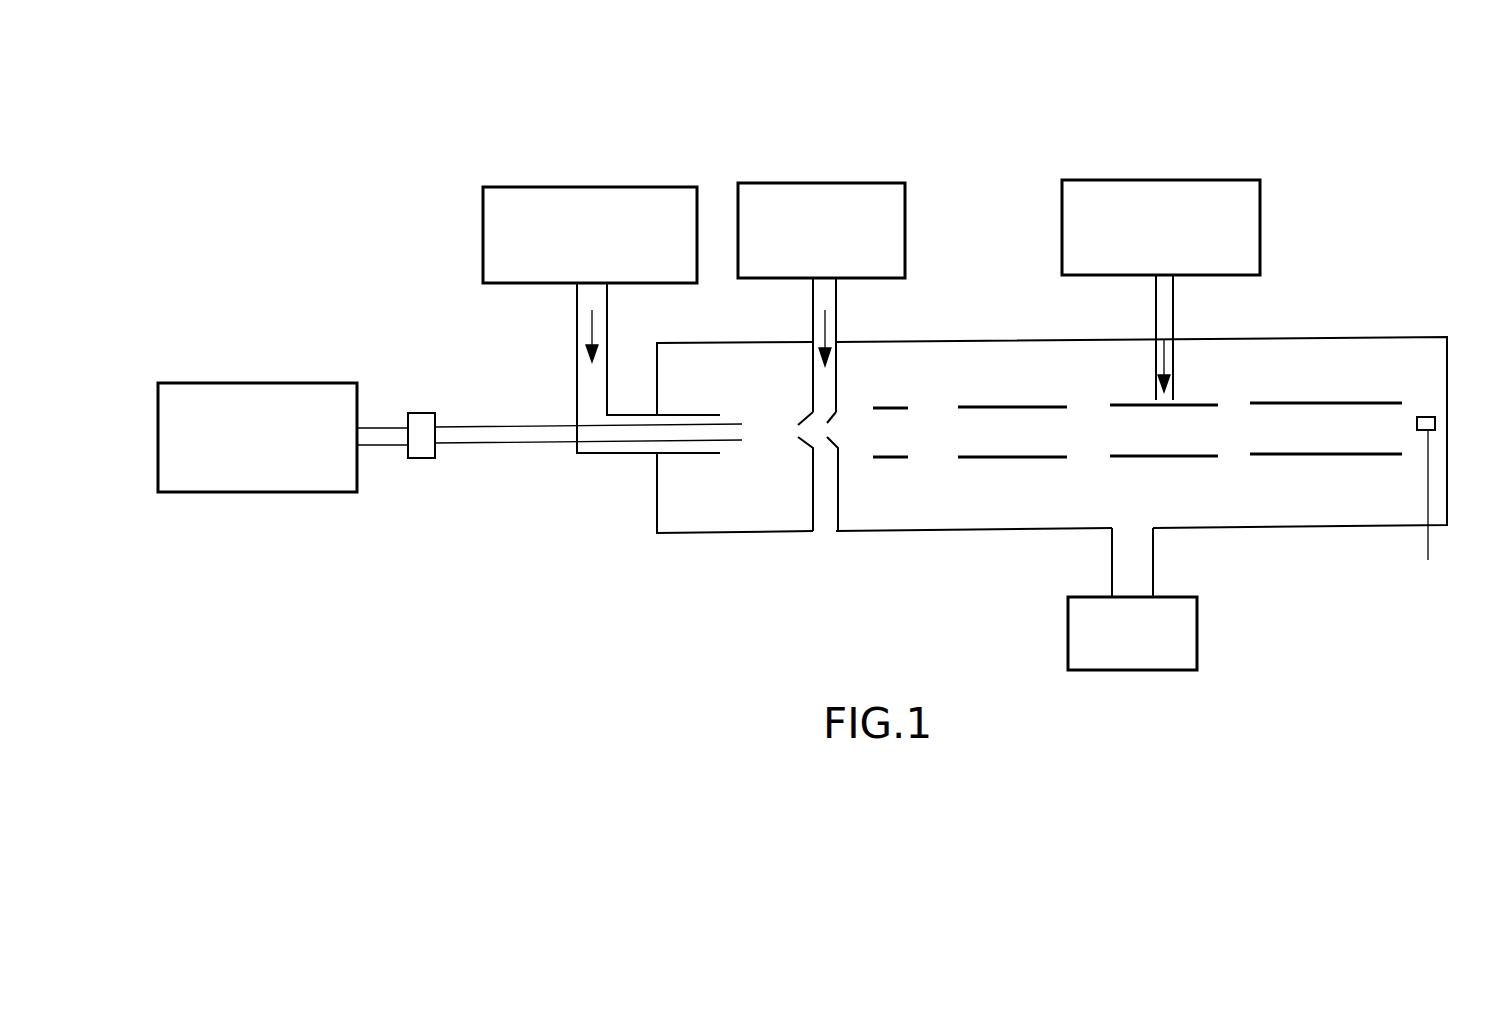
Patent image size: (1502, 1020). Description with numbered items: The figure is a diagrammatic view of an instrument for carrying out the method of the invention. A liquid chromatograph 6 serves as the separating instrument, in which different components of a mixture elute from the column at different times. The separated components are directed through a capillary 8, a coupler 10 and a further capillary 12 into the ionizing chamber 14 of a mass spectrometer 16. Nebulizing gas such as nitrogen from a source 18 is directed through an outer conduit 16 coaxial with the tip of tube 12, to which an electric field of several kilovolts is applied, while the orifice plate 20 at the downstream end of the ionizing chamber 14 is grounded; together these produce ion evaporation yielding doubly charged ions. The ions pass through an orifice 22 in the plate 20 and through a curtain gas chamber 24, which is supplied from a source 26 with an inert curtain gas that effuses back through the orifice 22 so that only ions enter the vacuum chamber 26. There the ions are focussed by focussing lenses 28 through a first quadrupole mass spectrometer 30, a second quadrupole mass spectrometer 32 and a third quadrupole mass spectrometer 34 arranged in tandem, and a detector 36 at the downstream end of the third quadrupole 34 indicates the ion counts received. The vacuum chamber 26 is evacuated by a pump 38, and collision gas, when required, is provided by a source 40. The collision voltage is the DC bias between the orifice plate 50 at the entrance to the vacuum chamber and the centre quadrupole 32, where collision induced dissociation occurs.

The liquid chromatograph 6 is at (252, 383).
The capillary 8 is at (372, 428).
The coupler 10 is at (423, 413).
The further capillary 12 is at (478, 425).
The ionizing chamber 14 is at (668, 506).
The mass spectrometer 16 is at (1094, 135).
The nebulizing gas source 18 is at (565, 187).
The orifice plate 20 is at (810, 507).
The orifice 22 is at (795, 433).
The curtain gas chamber 24 is at (825, 522).
The curtain gas source 26 is at (795, 183).
The focussing lenses 28 is at (905, 458).
The first quadrupole mass spectrometer 30 is at (1040, 458).
The second quadrupole mass spectrometer 32 is at (1155, 457).
The third quadrupole mass spectrometer 34 is at (1305, 455).
The detector 36 is at (1435, 424).
The pump 38 is at (1197, 640).
The collision gas source 40 is at (1260, 240).
The orifice plate 50 is at (843, 378).